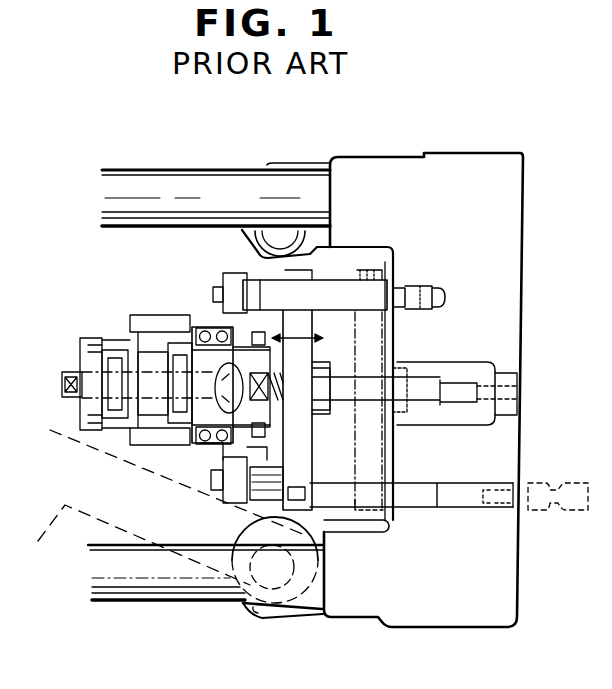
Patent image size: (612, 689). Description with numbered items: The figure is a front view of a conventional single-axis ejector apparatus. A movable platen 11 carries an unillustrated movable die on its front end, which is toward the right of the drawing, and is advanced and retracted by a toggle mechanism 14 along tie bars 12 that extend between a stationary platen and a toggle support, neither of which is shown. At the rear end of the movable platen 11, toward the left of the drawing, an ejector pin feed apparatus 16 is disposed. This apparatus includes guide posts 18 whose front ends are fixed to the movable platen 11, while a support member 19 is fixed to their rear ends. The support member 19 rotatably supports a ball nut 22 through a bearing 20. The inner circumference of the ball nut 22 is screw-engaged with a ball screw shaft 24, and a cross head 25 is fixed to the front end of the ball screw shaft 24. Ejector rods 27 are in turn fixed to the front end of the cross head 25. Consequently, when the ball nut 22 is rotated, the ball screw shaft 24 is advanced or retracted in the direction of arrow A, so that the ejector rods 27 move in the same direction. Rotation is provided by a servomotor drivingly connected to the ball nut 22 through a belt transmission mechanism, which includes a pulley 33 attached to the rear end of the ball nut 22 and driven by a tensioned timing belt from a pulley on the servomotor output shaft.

The movable platen 11 is at (433, 207).
The tie bars 12 is at (172, 188).
The toggle mechanism 14 is at (166, 515).
The ejector pin feed apparatus 16 is at (157, 258).
The guide posts 18 is at (338, 287).
The support member 19 is at (233, 497).
The bearing 20 is at (203, 445).
The ball nut 22 is at (147, 350).
The ball screw shaft 24 is at (283, 422).
The cross head 25 is at (302, 430).
The ejector rods 27 is at (433, 377).
The pulley 33 is at (112, 343).